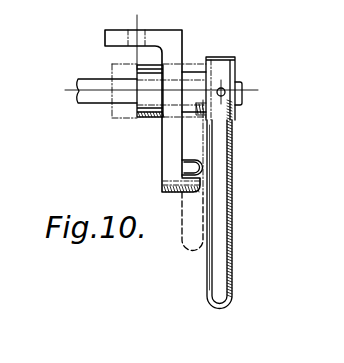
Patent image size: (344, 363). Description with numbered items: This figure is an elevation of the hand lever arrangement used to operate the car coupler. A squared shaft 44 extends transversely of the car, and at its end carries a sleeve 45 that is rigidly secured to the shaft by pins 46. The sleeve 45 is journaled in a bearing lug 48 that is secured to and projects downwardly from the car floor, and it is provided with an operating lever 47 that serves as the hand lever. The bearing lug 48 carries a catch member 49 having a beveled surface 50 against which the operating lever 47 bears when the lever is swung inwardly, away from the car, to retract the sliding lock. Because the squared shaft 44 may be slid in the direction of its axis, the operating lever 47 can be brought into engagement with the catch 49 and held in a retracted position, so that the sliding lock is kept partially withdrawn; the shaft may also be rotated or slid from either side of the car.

The squared shaft 44 is at (92, 98).
The sleeve 45 is at (190, 72).
The pin 46 is at (226, 88).
The operating lever 47 is at (228, 223).
The bearing lug 48 is at (165, 135).
The catch member 49 is at (193, 165).
The beveled surface 50 is at (200, 190).